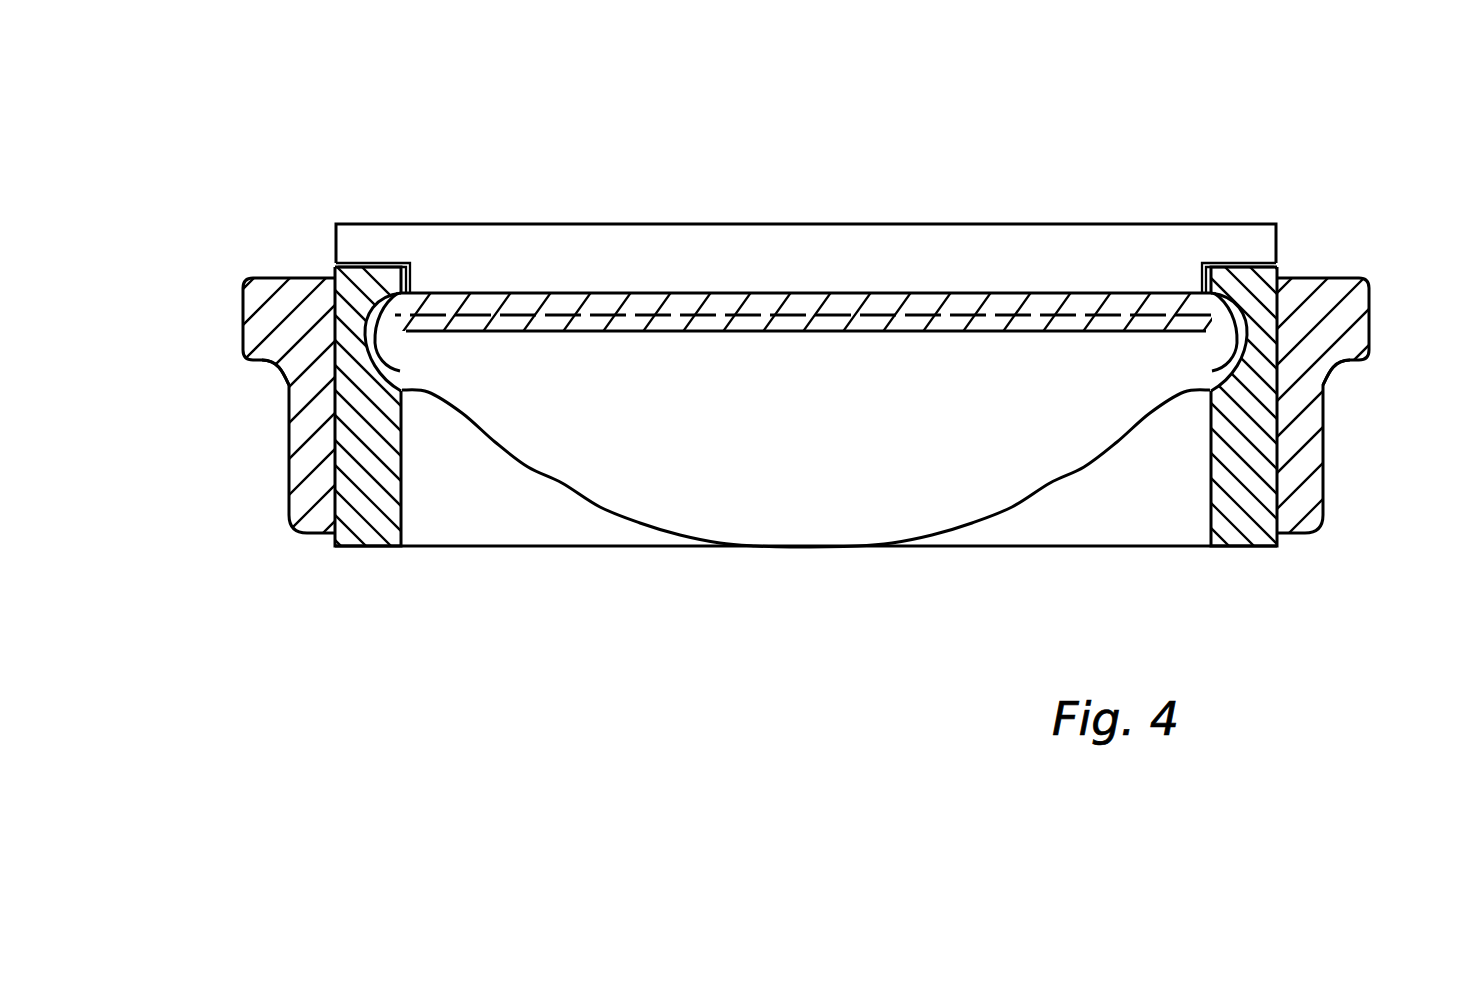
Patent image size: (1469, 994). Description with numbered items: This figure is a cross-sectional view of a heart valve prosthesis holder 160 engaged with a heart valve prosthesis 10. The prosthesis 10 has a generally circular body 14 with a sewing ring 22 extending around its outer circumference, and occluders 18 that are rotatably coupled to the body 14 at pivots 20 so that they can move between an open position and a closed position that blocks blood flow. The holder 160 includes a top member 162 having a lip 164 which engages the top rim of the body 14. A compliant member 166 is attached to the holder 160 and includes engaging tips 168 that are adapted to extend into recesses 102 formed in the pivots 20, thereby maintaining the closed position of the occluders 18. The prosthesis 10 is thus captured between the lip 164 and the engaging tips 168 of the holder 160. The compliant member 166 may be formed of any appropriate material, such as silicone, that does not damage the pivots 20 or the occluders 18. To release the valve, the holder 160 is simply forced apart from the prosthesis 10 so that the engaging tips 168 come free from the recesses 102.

The heart valve prosthesis 10 is at (188, 210).
The heart valve prosthesis body 14 is at (360, 541).
The occluders 18 is at (903, 502).
The pivots 20 is at (288, 393).
The sewing ring 22 is at (1321, 468).
The recesses 102 is at (365, 311).
The holder 160 is at (806, 242).
The top member 162 is at (608, 245).
The lip 164 is at (373, 271).
The compliant member 166 is at (725, 305).
The engaging tips 168 is at (395, 365).